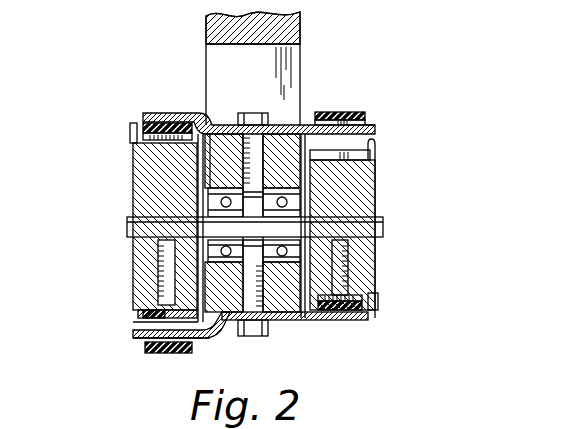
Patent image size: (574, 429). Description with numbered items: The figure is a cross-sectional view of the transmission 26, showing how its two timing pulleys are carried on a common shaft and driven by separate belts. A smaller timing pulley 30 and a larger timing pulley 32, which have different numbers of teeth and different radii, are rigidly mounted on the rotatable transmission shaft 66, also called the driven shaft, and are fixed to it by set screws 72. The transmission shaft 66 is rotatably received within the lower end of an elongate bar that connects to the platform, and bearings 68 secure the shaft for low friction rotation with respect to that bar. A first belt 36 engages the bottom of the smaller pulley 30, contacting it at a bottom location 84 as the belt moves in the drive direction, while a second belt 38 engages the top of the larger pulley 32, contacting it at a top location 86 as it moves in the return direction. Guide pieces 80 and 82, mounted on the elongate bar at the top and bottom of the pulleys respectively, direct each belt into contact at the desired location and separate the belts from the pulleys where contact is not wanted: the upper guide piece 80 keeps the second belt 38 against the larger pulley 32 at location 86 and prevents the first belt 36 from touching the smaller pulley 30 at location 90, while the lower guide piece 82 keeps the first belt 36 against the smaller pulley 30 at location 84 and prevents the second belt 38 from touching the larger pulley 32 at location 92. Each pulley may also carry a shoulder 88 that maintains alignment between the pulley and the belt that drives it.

The transmission 26 is at (138, 94).
The smaller timing pulley 30 is at (376, 170).
The larger timing pulley 32 is at (133, 168).
The first belt 36 is at (341, 112).
The second belt 38 is at (170, 354).
The transmission shaft 66 is at (384, 227).
The bearings 68 is at (228, 337).
The set screws 72 is at (160, 268).
The guide piece 80 is at (168, 112).
The guide piece 82 is at (140, 338).
The bottom location 84 is at (381, 293).
The top location 86 is at (125, 141).
The shoulder 88 is at (138, 318).
The location 90 is at (374, 121).
The location 92 is at (136, 342).